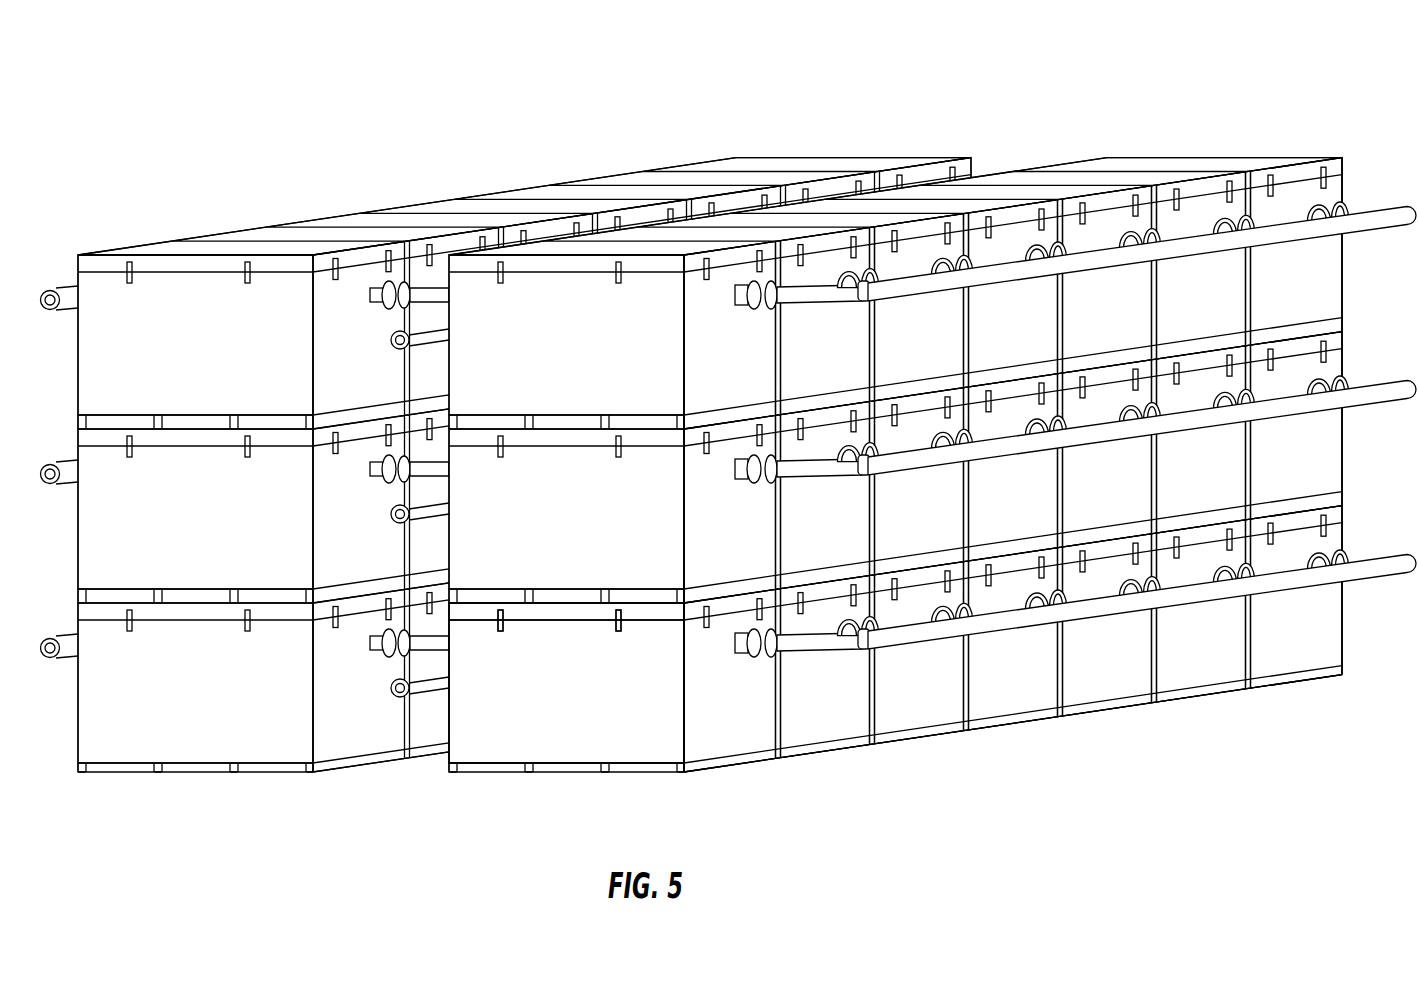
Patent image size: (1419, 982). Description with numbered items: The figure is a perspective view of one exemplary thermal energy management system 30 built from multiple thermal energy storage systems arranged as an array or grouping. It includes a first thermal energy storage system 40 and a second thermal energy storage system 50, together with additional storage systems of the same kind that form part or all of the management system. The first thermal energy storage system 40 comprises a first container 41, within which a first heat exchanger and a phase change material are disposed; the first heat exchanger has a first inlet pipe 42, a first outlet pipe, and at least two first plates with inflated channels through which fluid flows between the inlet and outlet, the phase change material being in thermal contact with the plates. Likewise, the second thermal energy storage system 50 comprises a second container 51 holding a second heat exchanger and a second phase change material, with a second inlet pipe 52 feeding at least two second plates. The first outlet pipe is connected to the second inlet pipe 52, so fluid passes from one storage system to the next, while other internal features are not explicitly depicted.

The thermal energy management system 30 is at (946, 85).
The first thermal energy storage system 40 is at (454, 792).
The first container 41 is at (535, 701).
The first inlet pipe 42 is at (768, 666).
The second thermal energy storage system 50 is at (932, 522).
The second container 51 is at (796, 737).
The second inlet pipe 52 is at (884, 645).